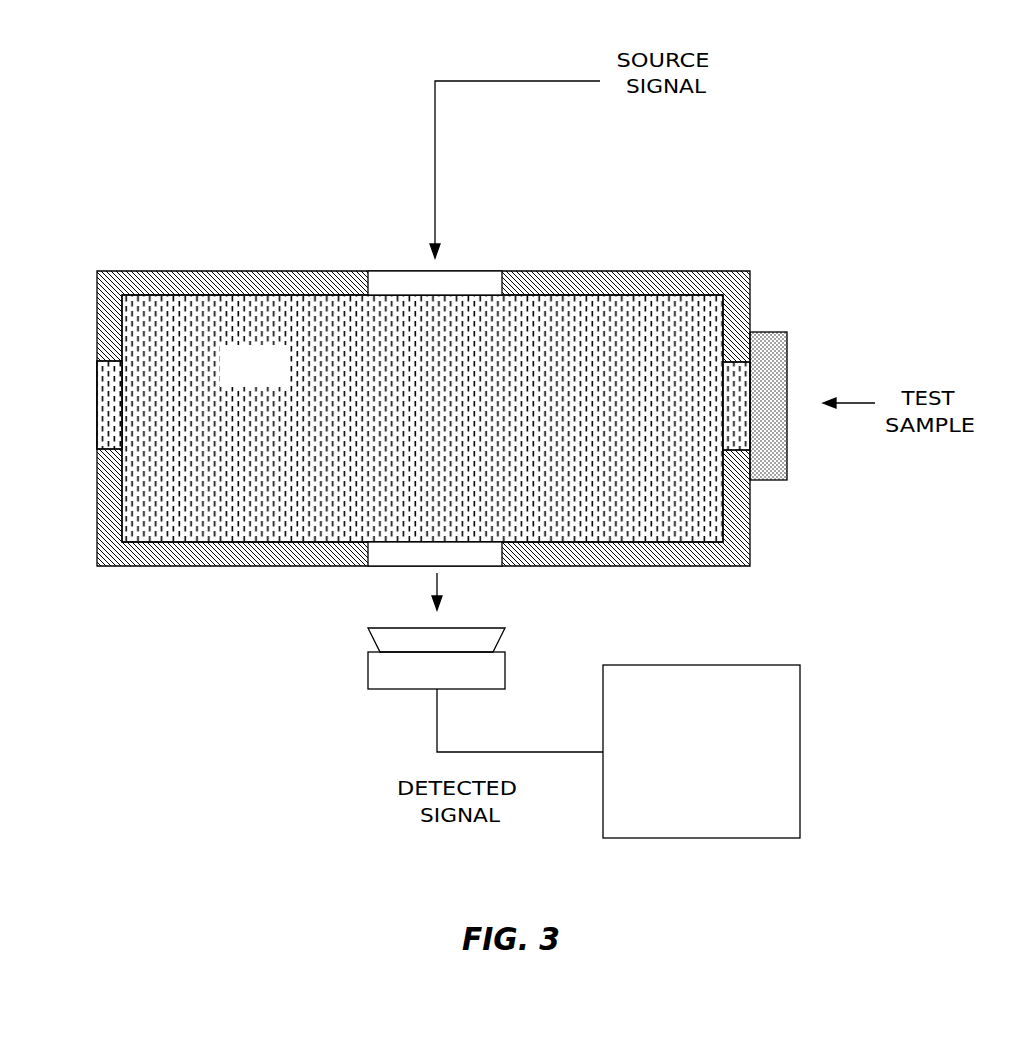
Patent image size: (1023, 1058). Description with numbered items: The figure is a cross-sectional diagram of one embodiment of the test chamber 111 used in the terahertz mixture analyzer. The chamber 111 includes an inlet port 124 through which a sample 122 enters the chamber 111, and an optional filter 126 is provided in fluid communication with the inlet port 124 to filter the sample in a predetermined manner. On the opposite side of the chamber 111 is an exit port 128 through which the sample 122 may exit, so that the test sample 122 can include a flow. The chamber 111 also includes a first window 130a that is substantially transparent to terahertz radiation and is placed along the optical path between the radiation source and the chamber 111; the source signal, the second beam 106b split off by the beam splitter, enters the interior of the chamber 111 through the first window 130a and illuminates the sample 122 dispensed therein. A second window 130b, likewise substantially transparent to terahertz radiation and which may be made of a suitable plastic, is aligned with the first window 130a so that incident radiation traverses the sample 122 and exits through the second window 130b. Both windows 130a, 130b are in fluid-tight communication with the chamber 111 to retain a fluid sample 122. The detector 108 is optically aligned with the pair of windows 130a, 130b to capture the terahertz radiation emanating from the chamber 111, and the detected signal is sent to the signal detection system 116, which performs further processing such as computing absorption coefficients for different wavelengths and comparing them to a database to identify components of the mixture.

The second beam 106b is at (423, 137).
The detector 108 is at (383, 692).
The test chamber 111 is at (728, 270).
The signal detection system 116 is at (768, 665).
The sample 122 is at (422, 418).
The inlet port 124 is at (748, 442).
The filter 126 is at (777, 332).
The exit port 128 is at (98, 372).
The first window 130a is at (490, 268).
The second window 130b is at (382, 570).